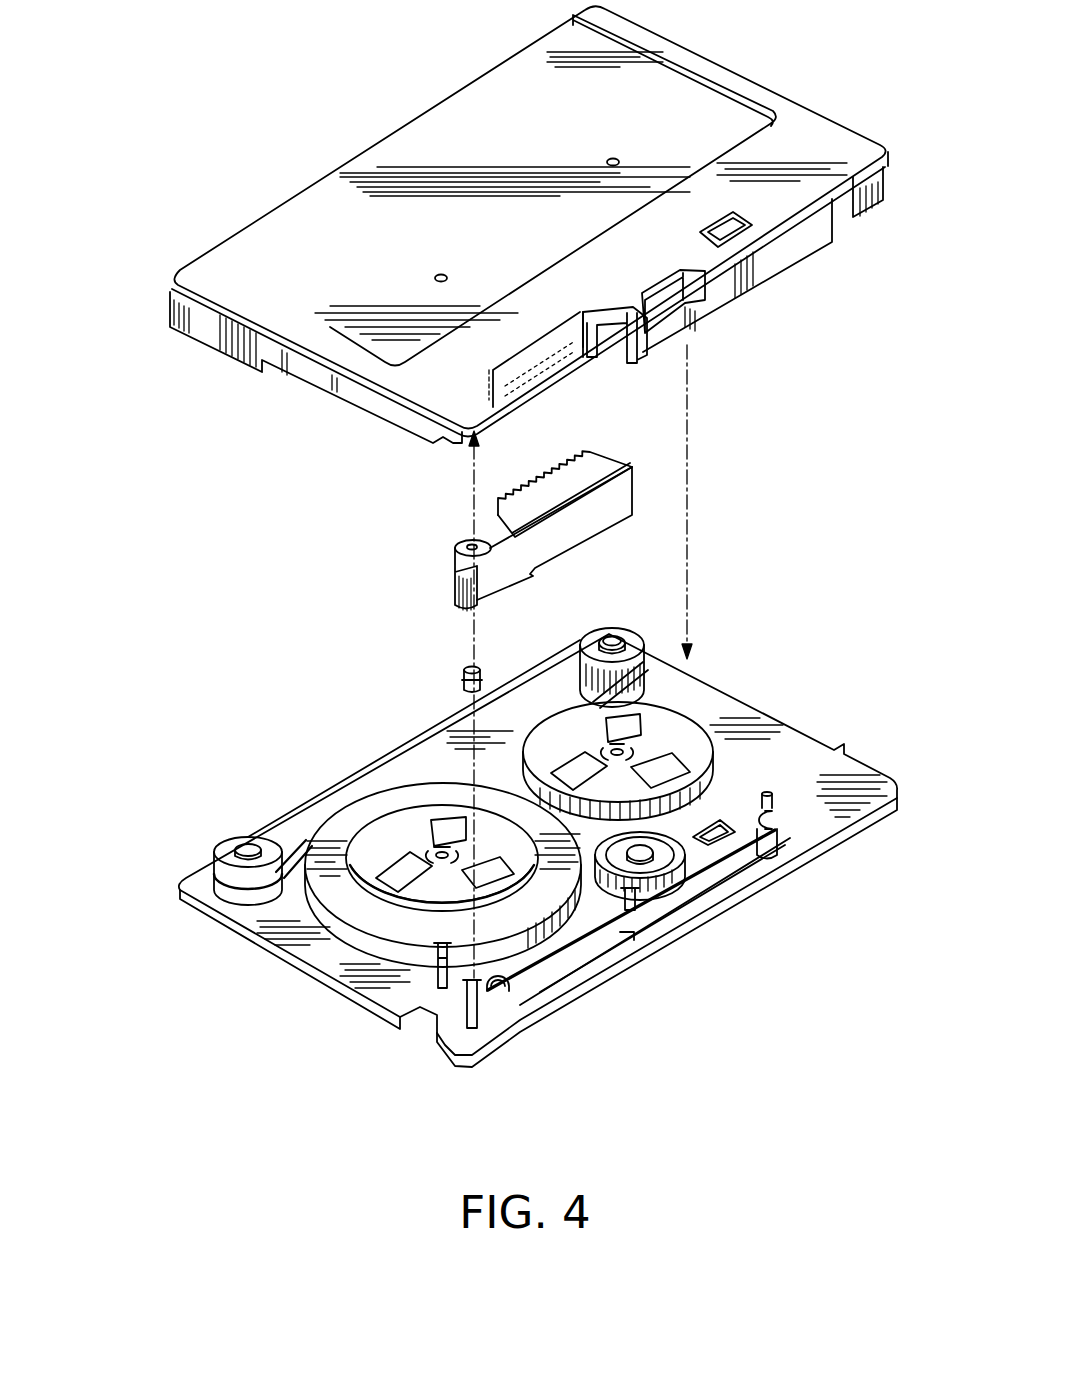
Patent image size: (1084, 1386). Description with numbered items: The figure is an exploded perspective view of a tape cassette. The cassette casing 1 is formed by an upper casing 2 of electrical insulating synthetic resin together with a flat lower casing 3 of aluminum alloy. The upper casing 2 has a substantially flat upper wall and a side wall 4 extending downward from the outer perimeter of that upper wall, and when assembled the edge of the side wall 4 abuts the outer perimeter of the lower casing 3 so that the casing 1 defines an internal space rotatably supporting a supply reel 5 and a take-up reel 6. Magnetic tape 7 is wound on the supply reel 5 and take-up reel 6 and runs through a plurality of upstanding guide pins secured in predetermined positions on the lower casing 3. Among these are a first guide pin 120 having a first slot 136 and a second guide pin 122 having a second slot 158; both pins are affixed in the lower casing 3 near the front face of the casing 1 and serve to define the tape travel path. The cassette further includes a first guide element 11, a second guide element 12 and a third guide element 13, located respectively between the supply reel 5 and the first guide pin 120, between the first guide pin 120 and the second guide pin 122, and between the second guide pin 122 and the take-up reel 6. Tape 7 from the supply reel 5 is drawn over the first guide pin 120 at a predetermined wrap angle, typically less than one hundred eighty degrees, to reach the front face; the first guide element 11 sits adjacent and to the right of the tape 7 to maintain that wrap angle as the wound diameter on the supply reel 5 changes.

The cassette casing 1 is at (173, 265).
The upper casing 2 is at (818, 97).
The lower casing 3 is at (817, 730).
The side wall 4 is at (207, 339).
The supply reel 5 is at (680, 727).
The take-up reel 6 is at (377, 833).
The magnetic tape 7 is at (705, 890).
The first guide element 11 is at (770, 797).
The second guide element 12 is at (628, 912).
The third guide element 13 is at (437, 967).
The first guide pin 120 is at (778, 818).
The second guide pin 122 is at (510, 983).
The first slot 136 is at (780, 847).
The second slot 158 is at (488, 977).